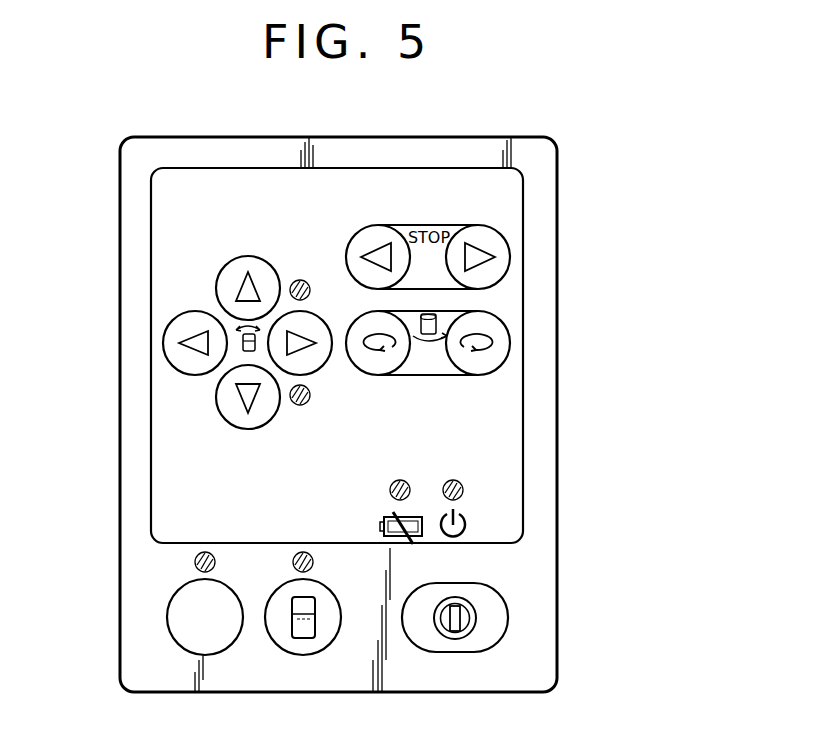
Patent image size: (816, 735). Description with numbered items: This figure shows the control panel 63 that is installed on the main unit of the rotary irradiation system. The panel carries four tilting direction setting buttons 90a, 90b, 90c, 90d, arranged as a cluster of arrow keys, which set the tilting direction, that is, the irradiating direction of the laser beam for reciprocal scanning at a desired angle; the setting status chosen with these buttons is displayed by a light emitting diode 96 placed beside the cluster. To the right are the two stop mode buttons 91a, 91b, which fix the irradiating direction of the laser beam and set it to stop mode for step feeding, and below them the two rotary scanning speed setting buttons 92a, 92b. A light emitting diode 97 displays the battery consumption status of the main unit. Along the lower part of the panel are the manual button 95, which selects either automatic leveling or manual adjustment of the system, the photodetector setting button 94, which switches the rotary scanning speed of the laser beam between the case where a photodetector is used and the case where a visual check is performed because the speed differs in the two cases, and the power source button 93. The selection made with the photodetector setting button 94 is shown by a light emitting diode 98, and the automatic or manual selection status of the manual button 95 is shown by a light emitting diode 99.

The control panel 63 is at (559, 152).
The tilting direction setting button 90a is at (262, 275).
The tilting direction setting button 90b is at (312, 333).
The tilting direction setting button 90c is at (228, 406).
The tilting direction setting button 90d is at (177, 338).
The light emitting diode 96 is at (301, 281).
The stop mode button 91a is at (381, 226).
The stop mode button 91b is at (505, 263).
The rotary scanning speed setting button 92a is at (388, 368).
The rotary scanning speed setting button 92b is at (505, 350).
The light emitting diode 97 is at (405, 480).
The light emitting diode 98 is at (302, 551).
The light emitting diode 99 is at (200, 553).
The manual button 95 is at (172, 613).
The photodetector setting button 94 is at (307, 645).
The power source button 93 is at (497, 603).